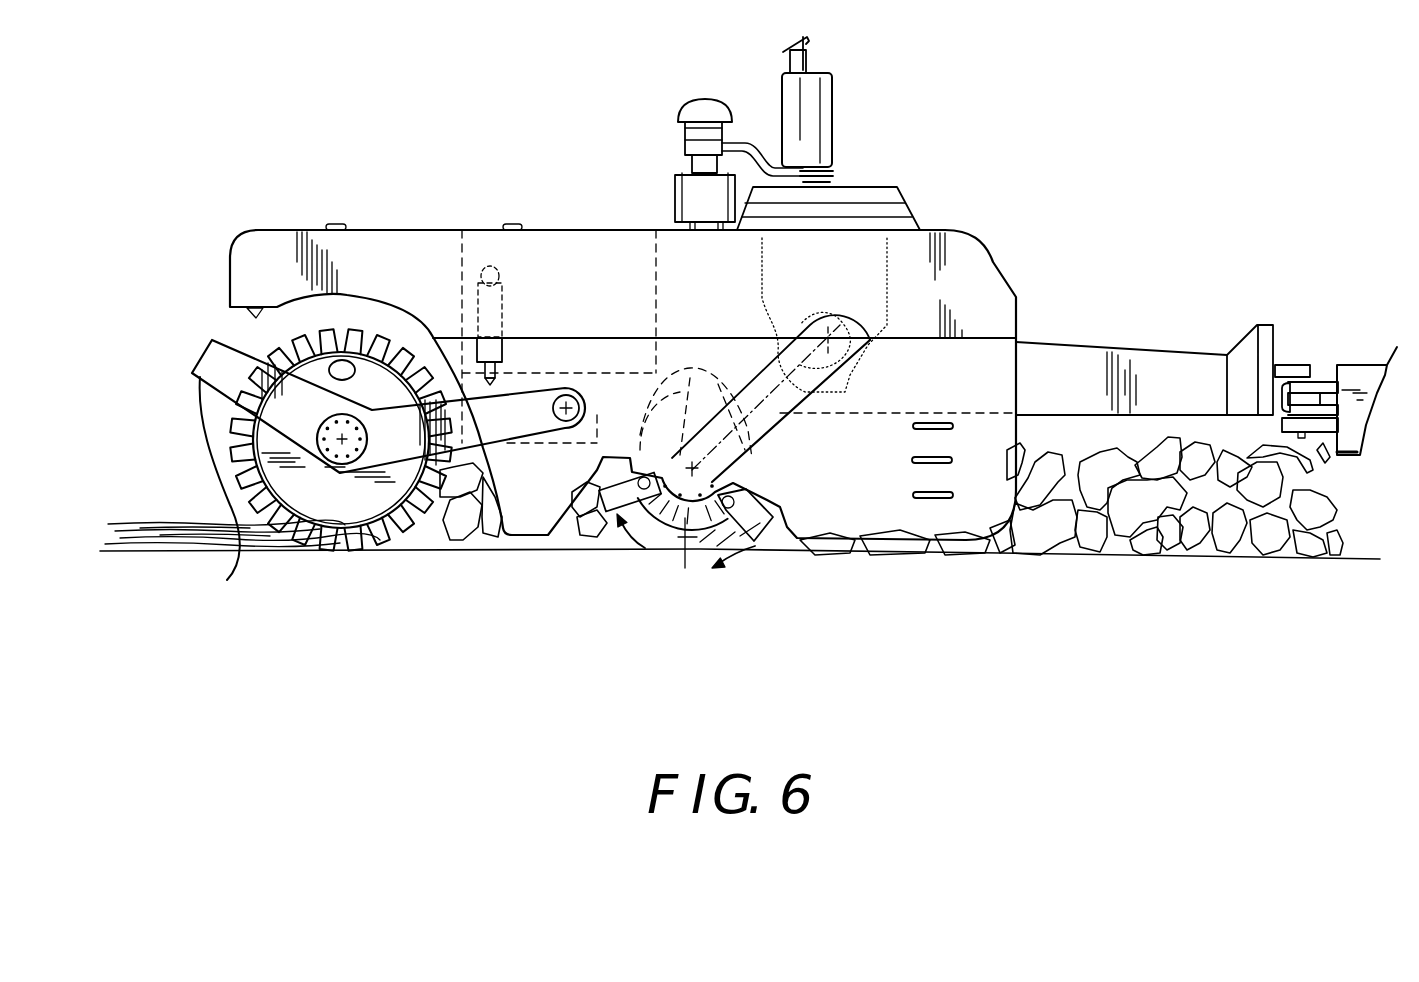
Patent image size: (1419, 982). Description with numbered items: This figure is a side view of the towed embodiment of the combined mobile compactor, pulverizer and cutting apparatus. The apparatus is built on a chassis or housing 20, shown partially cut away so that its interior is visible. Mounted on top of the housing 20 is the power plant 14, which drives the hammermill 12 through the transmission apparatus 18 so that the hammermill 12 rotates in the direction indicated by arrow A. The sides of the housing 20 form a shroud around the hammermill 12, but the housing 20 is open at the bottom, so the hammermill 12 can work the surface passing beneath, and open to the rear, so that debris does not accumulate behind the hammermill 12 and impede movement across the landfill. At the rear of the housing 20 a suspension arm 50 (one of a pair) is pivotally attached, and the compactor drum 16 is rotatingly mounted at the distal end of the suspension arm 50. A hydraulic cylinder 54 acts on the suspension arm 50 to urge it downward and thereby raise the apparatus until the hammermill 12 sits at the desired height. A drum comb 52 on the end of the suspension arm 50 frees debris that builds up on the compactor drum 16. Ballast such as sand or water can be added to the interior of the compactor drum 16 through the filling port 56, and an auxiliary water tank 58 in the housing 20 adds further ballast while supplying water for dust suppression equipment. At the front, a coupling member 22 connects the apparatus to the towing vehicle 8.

The tractor hitch block 8 is at (1355, 373).
The hammermill 12 is at (687, 555).
The power plant 14 is at (860, 247).
The compactor drum 16 is at (395, 498).
The transmission apparatus 18 is at (783, 393).
The chassis or housing 20 is at (478, 242).
The coupling member 22 is at (1280, 397).
The suspension arms 50 is at (493, 433).
The drum comb 52 is at (200, 377).
The hydraulic cylinders 54 is at (496, 305).
The filling port 56 is at (343, 362).
The auxiliary water tank 58 is at (273, 245).
The direction of rotation arrow A is at (686, 558).